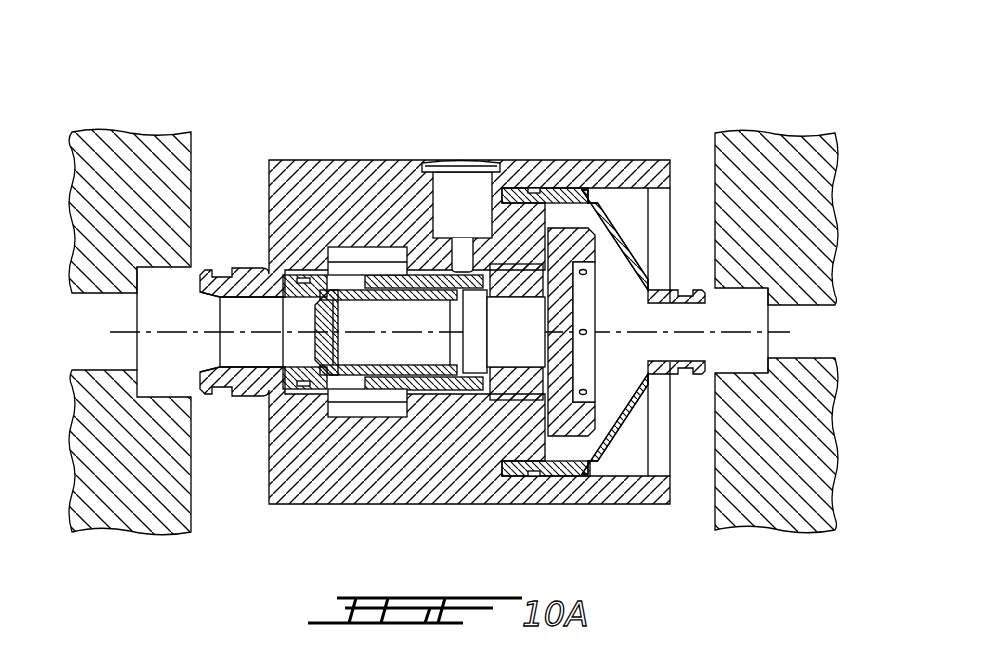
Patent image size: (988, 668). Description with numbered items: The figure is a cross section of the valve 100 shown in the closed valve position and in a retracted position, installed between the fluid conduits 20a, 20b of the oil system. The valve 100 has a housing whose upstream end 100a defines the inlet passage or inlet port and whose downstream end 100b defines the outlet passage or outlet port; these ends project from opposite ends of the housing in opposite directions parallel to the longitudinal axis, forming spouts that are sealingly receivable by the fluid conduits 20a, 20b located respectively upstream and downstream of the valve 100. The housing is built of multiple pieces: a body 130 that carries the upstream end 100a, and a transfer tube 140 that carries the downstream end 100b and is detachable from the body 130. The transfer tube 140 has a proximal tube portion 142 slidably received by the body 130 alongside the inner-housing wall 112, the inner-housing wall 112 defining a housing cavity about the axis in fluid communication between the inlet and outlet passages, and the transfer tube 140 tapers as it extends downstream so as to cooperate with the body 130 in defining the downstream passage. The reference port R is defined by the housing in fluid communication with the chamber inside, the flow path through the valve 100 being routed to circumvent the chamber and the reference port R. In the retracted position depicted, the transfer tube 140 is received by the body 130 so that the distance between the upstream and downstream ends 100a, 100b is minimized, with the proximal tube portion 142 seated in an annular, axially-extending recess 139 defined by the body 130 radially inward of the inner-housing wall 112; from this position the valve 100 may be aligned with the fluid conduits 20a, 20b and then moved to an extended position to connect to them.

The valve 100 is at (466, 294).
The upstream end 100a is at (204, 283).
The downstream end 100b is at (706, 300).
The fluid conduit 20a is at (200, 399).
The fluid conduit 20b is at (703, 383).
The body 130 is at (378, 160).
The reference port R is at (437, 161).
The recess 139 is at (508, 188).
The transfer tube 140 is at (560, 188).
The proximal tube portion 142 is at (615, 332).
The inner-housing wall 112 is at (567, 476).